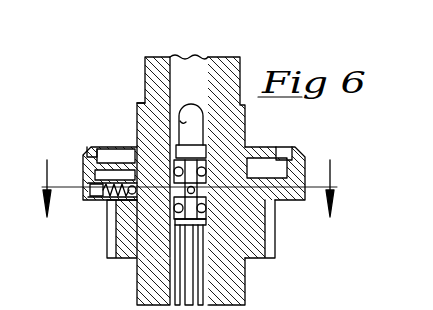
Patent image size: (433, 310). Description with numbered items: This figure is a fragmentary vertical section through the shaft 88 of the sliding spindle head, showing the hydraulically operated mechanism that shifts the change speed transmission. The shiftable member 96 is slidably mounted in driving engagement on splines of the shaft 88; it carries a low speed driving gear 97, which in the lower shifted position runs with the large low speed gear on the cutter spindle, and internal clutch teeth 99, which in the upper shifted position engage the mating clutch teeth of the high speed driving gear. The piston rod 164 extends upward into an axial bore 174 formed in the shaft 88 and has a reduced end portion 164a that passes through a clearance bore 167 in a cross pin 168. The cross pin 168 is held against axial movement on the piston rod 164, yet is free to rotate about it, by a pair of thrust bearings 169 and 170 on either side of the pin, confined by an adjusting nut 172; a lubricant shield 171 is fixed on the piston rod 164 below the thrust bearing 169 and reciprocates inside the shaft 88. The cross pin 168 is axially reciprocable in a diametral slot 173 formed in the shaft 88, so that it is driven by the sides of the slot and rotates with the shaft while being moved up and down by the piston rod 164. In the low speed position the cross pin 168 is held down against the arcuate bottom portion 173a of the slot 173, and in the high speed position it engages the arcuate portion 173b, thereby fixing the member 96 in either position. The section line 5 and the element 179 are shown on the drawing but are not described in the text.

The section line 5- 5 is at (188, 203).
The shaft 88 is at (170, 274).
The shiftable member 96 is at (301, 155).
The low speed driving gear 97 is at (277, 250).
The internal clutch teeth 99 is at (277, 162).
The piston rod 164 is at (232, 291).
The reduced end portion 164a is at (208, 198).
The clearance bore 167 is at (209, 172).
The cross pin 168 is at (174, 205).
The thrust bearing 169 is at (172, 162).
The thrust bearing 170 is at (174, 218).
The lubricant shield 171 is at (206, 236).
The adjusting nut 172 is at (173, 139).
The diametral slot 173 is at (191, 117).
The arcuate bottom portion 173a is at (185, 221).
The arcuate portion 173b is at (180, 121).
The axial bore 174 is at (209, 58).
The shoulder 179 is at (135, 104).